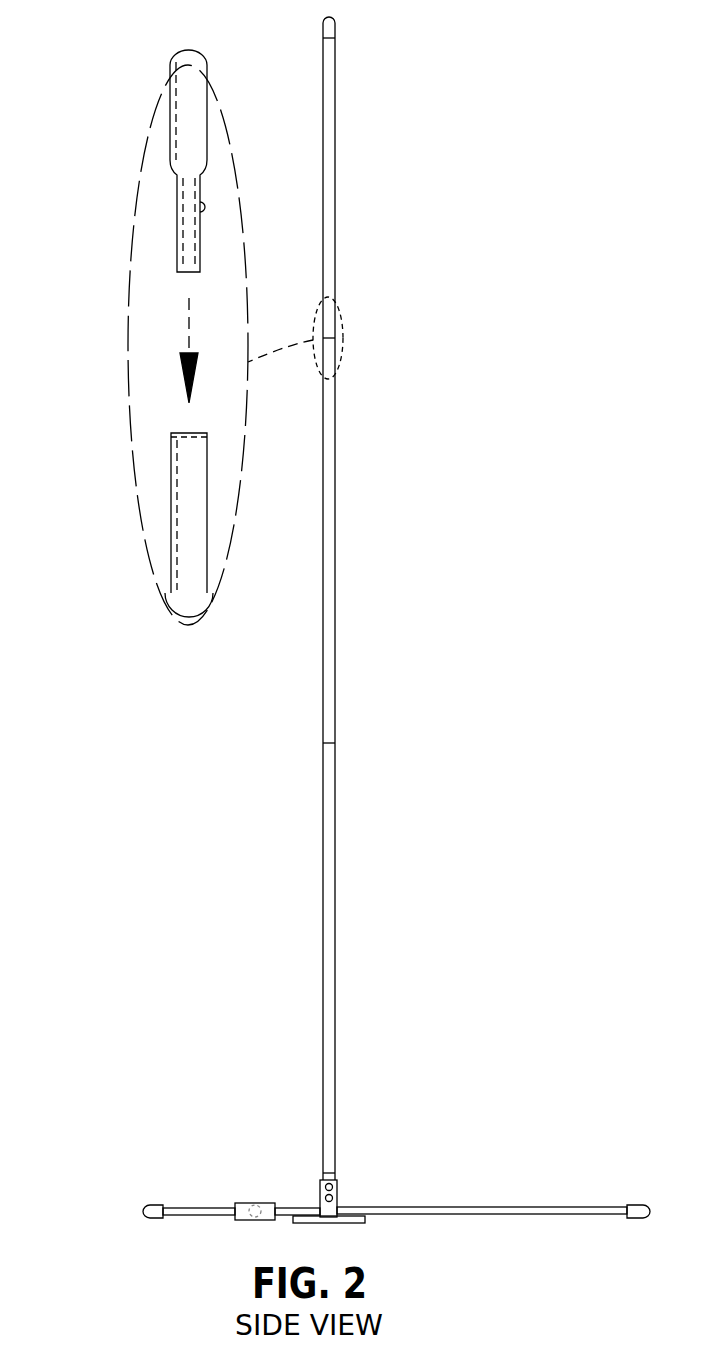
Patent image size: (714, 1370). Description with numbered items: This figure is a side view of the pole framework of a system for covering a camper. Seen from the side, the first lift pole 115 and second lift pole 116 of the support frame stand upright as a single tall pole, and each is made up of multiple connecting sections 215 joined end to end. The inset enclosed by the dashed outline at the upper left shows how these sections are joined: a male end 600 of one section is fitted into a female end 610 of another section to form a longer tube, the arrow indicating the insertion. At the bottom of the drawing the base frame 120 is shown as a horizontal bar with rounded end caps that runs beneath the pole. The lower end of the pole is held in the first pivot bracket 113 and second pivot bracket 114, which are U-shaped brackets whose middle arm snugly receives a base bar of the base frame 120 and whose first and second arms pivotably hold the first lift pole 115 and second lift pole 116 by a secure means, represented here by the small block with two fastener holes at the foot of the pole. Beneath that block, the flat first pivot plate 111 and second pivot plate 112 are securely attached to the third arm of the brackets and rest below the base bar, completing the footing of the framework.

The first pivot plate 111 is at (406, 1242).
The second pivot plate 112 is at (363, 1220).
The first pivot bracket 113 is at (416, 1181).
The second pivot bracket 114 is at (337, 1193).
The first lift pole 115 is at (262, 598).
The second lift pole 116 is at (323, 1017).
The base frame 120 is at (162, 1207).
The connecting sections 215 is at (410, 321).
The male end 600 is at (182, 205).
The female end 610 is at (178, 460).